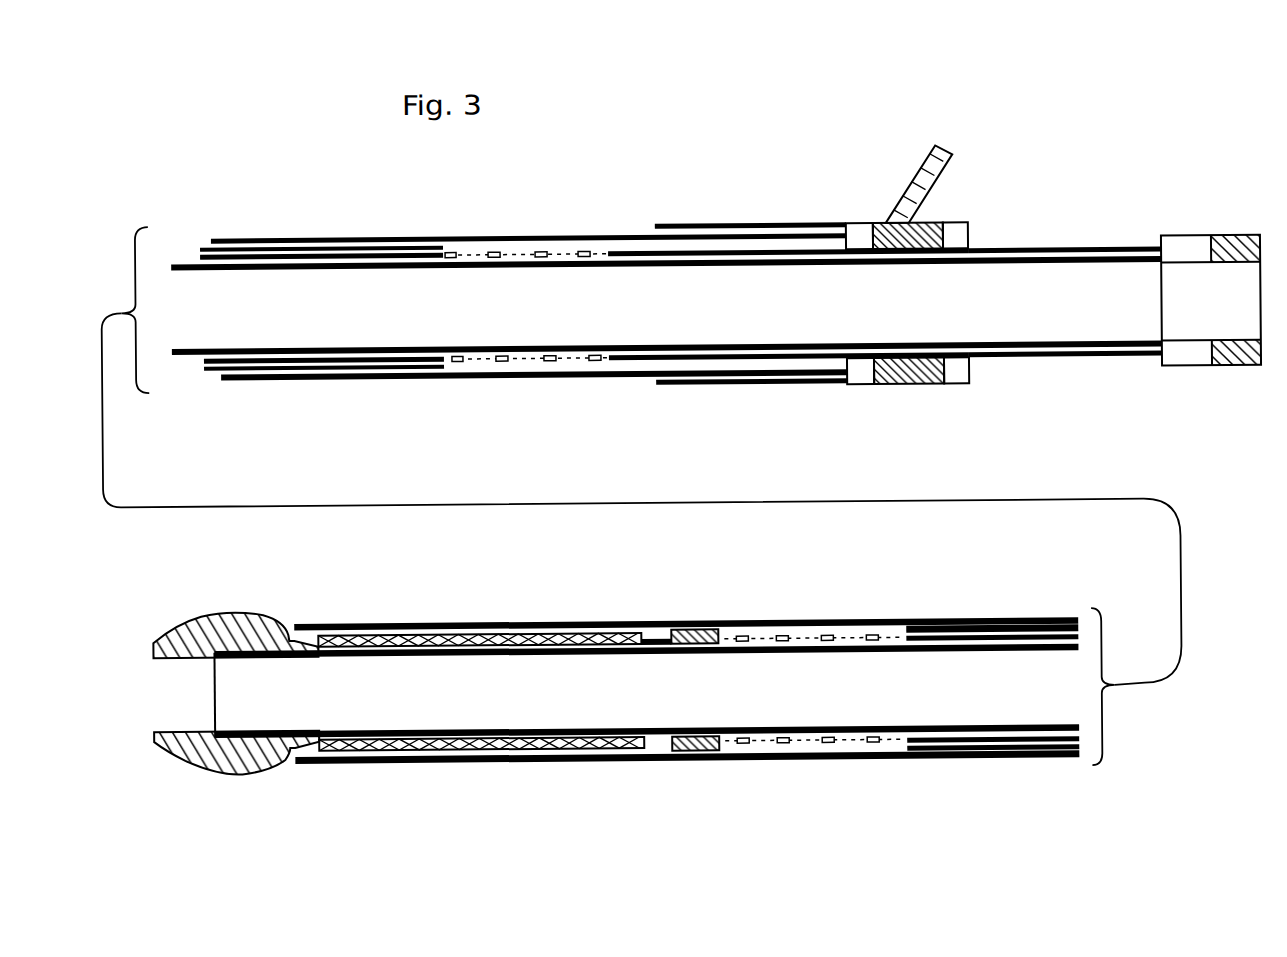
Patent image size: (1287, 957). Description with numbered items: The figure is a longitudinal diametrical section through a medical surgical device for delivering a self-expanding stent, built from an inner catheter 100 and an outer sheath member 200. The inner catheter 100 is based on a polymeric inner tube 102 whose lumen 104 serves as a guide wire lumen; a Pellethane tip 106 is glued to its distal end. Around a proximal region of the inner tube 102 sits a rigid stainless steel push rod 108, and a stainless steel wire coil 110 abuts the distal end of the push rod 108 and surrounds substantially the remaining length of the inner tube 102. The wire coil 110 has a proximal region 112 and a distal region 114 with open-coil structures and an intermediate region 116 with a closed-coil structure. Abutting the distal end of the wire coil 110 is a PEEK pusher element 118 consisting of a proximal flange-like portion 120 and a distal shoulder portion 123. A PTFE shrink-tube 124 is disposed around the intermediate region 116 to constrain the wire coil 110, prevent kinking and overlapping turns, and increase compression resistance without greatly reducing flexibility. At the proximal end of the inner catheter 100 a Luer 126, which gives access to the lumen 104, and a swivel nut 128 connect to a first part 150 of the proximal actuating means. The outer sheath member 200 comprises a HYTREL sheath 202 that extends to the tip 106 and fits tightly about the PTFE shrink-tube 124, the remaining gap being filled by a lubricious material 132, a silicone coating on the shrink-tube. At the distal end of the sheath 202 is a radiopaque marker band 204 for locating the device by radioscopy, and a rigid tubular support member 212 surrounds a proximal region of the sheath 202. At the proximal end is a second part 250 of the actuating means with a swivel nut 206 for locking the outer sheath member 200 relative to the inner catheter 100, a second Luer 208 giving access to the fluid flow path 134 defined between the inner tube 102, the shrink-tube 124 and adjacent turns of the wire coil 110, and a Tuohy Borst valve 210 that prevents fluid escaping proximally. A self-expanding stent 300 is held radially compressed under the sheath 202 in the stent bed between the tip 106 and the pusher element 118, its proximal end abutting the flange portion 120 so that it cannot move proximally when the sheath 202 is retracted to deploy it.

The inner catheter 100 is at (708, 471).
The inner tube 102 is at (565, 268).
The lumen 104 is at (705, 503).
The tip 106 is at (194, 624).
The push rod 108 is at (1112, 250).
The wire coil 110 is at (203, 251).
The proximal region 112 is at (610, 246).
The distal region 114 is at (898, 621).
The intermediate region 116 is at (437, 381).
The pusher element 118 is at (687, 752).
The proximal flange-like portion 120 is at (700, 630).
The distal shoulder portion 123 is at (651, 640).
The PTFE shrink-tube 124 is at (210, 243).
The Luer 126 is at (1230, 371).
The swivel nut 128 is at (1183, 371).
The lubricious material 132 is at (221, 372).
The fluid flow path 134 is at (207, 364).
The first part of proximal actuating means 150 is at (1199, 291).
The outer sheath member 200 is at (688, 224).
The sheath 202 is at (293, 234).
The radiopaque marker band 204 is at (325, 762).
The swivel nut 206 is at (860, 225).
The second Luer 208 is at (917, 180).
The Tuohy Borst valve 210 is at (960, 226).
The tubular support member 212 is at (717, 386).
The second part of proximal actuating means 250 is at (912, 387).
The self-expanding stent 300 is at (484, 748).